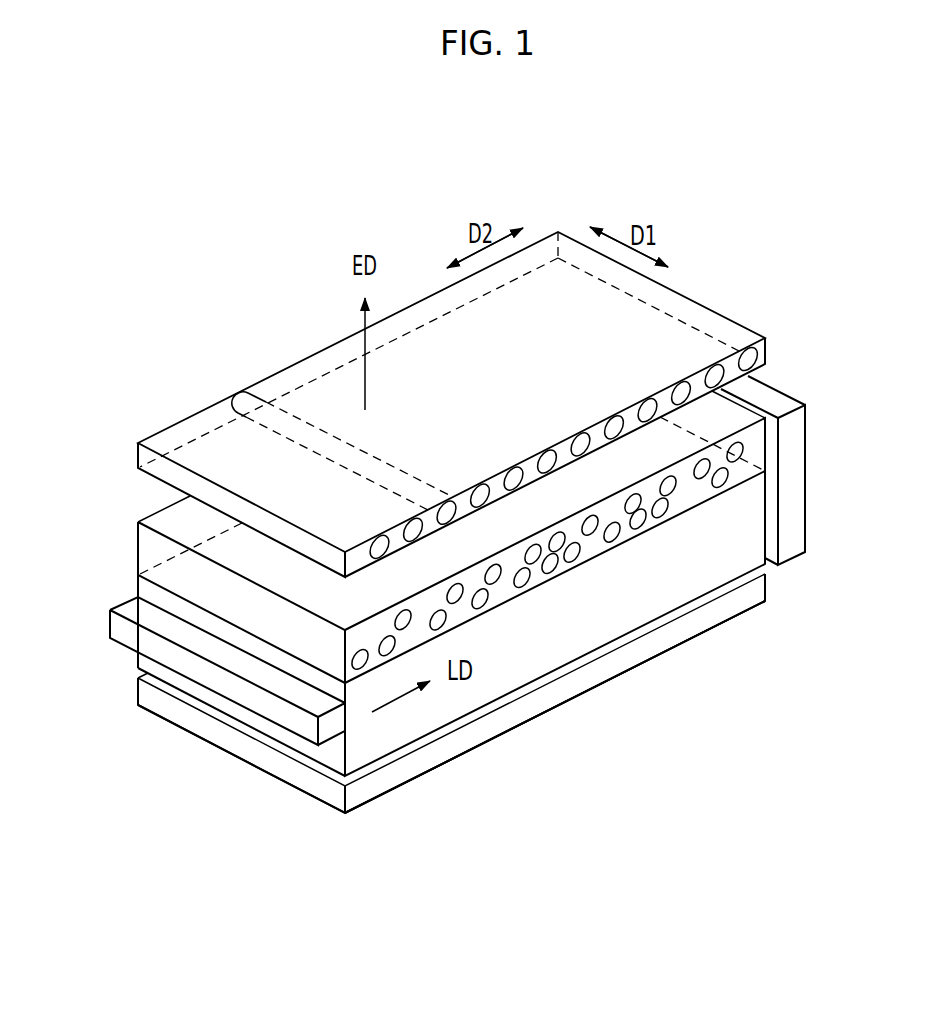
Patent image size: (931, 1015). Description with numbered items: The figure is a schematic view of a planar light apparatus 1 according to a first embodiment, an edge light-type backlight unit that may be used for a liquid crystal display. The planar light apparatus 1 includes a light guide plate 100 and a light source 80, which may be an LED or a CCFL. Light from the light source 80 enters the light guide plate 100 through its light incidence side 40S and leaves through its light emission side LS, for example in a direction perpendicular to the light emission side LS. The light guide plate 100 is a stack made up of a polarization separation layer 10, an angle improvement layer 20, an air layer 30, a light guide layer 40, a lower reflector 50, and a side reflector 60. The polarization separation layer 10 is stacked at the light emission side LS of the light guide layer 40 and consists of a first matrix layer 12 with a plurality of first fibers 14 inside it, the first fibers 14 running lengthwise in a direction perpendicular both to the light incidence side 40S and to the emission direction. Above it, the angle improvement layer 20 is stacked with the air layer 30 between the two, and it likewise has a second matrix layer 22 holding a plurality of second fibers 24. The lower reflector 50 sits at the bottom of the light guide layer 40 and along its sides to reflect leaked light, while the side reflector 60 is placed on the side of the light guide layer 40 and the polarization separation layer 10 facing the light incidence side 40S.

The planar light apparatus 1 is at (692, 746).
The polarization separation layer 10 is at (128, 548).
The first matrix layer 12 is at (503, 593).
The first fibers 14 is at (482, 602).
The angle improvement layer 20 is at (128, 427).
The second matrix layer 22 is at (732, 362).
The second fibers 24 is at (713, 367).
The air layer 30 is at (133, 470).
The light guide layer 40 is at (412, 720).
The light incidence side 40S is at (327, 753).
The lower reflector 50 is at (597, 673).
The side reflector 60 is at (773, 393).
The light source 80 is at (110, 623).
The light guide plate 100 is at (676, 661).
The light emission side LS is at (677, 325).